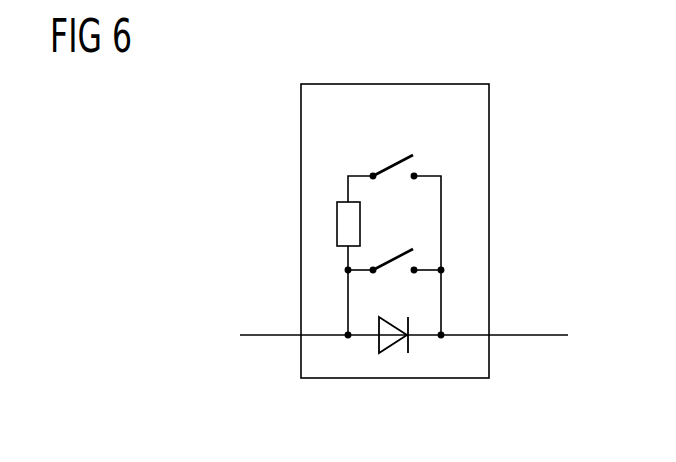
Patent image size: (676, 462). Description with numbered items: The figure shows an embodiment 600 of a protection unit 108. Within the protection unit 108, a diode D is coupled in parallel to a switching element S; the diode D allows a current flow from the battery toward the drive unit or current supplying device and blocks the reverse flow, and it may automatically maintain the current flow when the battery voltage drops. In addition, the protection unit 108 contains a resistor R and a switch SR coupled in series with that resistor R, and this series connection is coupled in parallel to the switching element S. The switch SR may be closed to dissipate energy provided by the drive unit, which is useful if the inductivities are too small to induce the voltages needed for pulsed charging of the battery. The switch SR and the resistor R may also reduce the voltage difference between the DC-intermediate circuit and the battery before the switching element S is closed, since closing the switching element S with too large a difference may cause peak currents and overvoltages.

The embodiment of a protection unit 600 is at (233, 182).
The protection unit 108 is at (489, 150).
The resistor R is at (337, 222).
The switch SR is at (390, 158).
The switching element S is at (391, 252).
The diode D is at (395, 353).